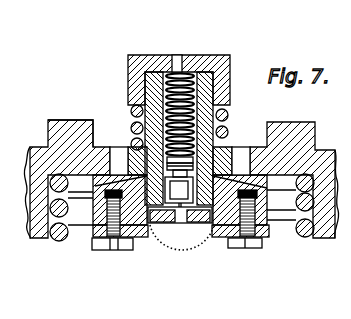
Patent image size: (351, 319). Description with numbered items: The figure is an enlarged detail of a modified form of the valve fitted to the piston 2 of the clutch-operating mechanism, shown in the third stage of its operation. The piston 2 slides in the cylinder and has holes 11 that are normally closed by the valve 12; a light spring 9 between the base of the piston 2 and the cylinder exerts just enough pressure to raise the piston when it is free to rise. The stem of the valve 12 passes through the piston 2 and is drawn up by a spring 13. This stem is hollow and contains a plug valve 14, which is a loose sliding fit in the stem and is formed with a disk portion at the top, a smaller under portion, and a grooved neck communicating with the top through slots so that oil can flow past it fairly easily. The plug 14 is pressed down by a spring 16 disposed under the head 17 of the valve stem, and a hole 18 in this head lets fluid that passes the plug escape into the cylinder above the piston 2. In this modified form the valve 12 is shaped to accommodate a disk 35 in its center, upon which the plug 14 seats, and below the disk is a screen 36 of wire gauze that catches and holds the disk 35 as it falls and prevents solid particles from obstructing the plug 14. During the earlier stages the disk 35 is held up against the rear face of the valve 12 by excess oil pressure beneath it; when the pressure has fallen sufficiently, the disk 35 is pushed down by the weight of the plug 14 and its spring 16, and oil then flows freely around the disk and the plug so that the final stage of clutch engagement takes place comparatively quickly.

The piston 2 is at (78, 146).
The light spring 9 is at (75, 207).
The holes 11 is at (121, 160).
The valve 12 is at (234, 240).
The spring 13 is at (228, 115).
The plug valve 14 is at (134, 104).
The spring 16 is at (180, 225).
The head 17 is at (197, 62).
The hole 18 is at (182, 62).
The disk 35 is at (198, 224).
The screen 36 is at (162, 238).